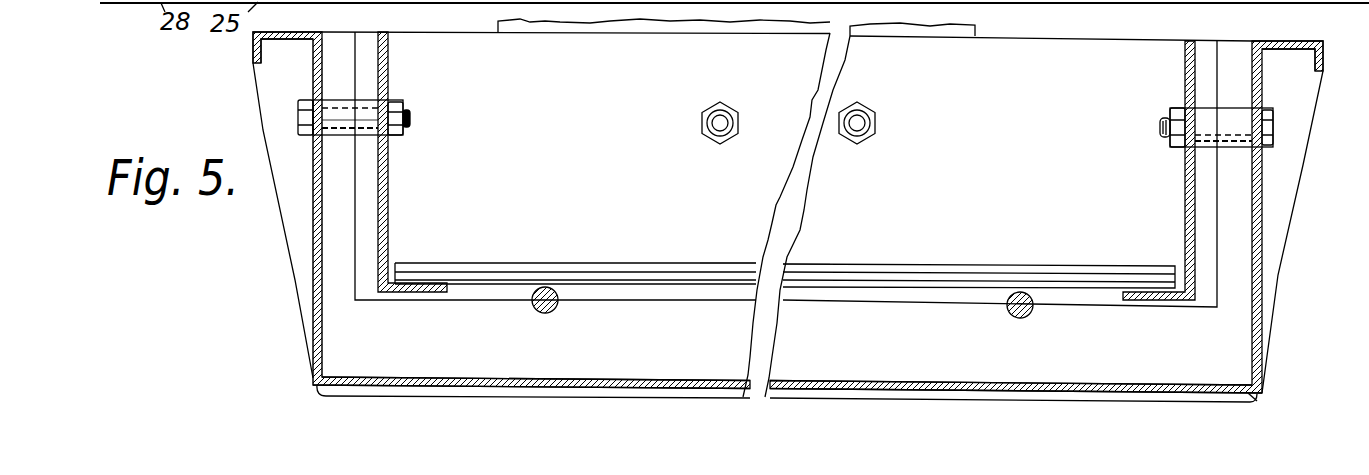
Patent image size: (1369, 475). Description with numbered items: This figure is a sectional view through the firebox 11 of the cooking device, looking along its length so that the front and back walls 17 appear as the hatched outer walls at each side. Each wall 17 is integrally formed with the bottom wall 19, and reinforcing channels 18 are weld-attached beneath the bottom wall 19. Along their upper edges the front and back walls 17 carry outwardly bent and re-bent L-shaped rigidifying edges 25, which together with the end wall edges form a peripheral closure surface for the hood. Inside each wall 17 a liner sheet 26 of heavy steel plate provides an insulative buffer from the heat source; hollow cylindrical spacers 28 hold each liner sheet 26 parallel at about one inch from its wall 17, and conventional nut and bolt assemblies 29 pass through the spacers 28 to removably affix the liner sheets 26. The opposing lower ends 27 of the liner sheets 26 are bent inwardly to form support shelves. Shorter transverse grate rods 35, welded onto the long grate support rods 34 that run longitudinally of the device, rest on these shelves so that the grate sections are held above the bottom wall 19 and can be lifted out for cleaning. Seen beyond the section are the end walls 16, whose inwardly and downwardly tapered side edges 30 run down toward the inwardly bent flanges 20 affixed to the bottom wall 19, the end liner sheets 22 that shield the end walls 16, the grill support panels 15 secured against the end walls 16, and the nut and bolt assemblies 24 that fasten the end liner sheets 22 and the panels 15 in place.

The firebox 11 is at (278, 308).
The grill support panels 15 is at (947, 30).
The end walls 16 is at (340, 220).
The front and back walls 17 is at (322, 303).
The channels 18 is at (1050, 396).
The bottom wall 19 is at (605, 380).
The inwardly bent flanges 20 is at (1257, 398).
The end liner sheets 22 is at (362, 248).
The nut and bolt assemblies 24 is at (723, 130).
The L-shaped rigidifying edges 25 is at (293, 39).
The liner sheets 26 is at (388, 172).
The inwardly bent lower ends 27 is at (417, 283).
The spacers 28 is at (355, 102).
The nut and bolt assemblies 29 is at (298, 115).
The tapered side edges 30 is at (275, 197).
The grate support rods 34 is at (537, 305).
The transverse grate rods 35 is at (818, 273).